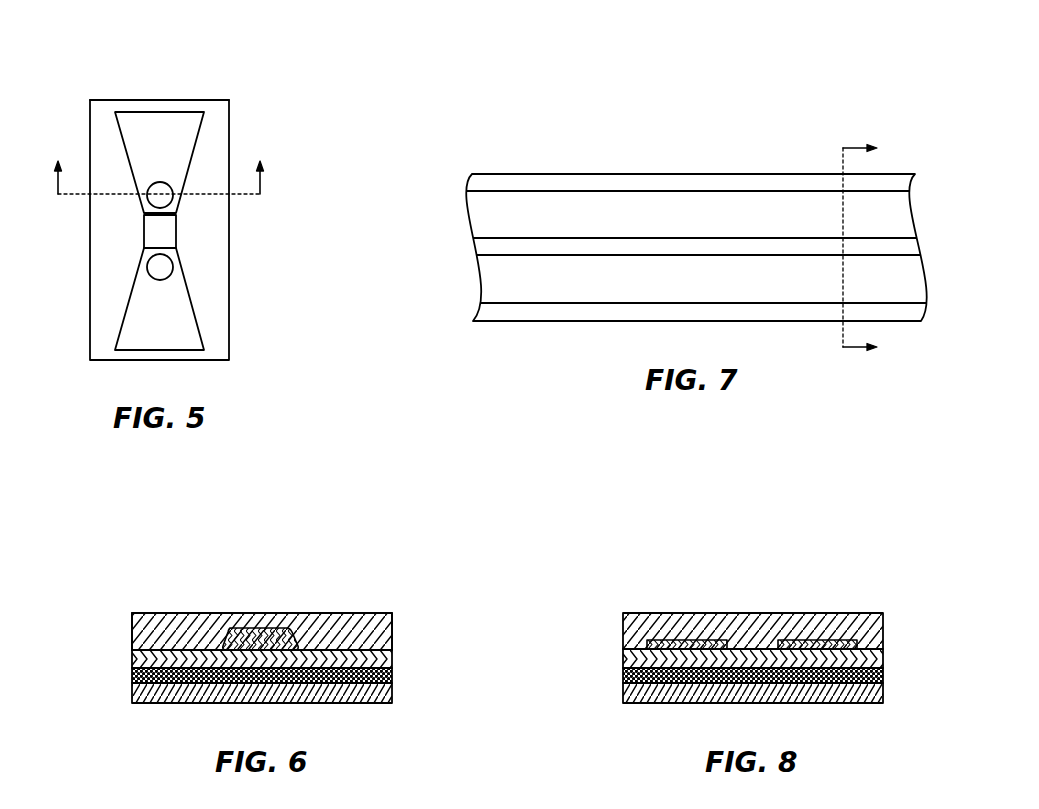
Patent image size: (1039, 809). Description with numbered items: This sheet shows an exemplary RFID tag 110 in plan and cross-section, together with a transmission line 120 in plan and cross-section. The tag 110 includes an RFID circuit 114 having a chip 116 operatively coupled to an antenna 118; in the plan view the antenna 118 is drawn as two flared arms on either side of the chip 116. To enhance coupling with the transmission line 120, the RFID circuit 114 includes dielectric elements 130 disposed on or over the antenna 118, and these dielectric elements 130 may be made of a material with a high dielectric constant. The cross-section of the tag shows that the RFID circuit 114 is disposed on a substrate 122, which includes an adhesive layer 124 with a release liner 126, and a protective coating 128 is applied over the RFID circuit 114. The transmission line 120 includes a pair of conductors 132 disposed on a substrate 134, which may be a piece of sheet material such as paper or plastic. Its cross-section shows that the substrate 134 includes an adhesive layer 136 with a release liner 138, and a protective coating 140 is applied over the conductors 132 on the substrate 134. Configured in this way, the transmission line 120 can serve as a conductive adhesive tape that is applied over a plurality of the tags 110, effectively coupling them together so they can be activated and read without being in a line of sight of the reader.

In FIG. 5, the RFID tag 110 is at (227, 68).
In FIG. 5, the RFID circuit 114 is at (108, 132).
In FIG. 5, the chip 116 is at (144, 230).
In FIG. 5, the antenna 118 is at (203, 128).
In FIG. 6, the antenna 118 is at (307, 638).
In FIG. 7, the transmission line 120 is at (765, 125).
In FIG. 5, the substrate 122 is at (163, 100).
In FIG. 6, the substrate 122 is at (132, 660).
In FIG. 6, the adhesive layer 124 is at (132, 675).
In FIG. 6, the release liner 126 is at (132, 695).
In FIG. 6, the protective coating 128 is at (132, 630).
In FIG. 5, the dielectric element 130 is at (152, 203).
In FIG. 6, the dielectric element 130 is at (263, 628).
In FIG. 7, the conductor 132 is at (473, 217).
In FIG. 8, the conductor 132 is at (685, 640).
In FIG. 7, the substrate 134 is at (533, 172).
In FIG. 8, the substrate 134 is at (623, 662).
In FIG. 8, the adhesive layer 136 is at (623, 676).
In FIG. 8, the release liner 138 is at (623, 695).
In FIG. 8, the protective coating 140 is at (623, 630).